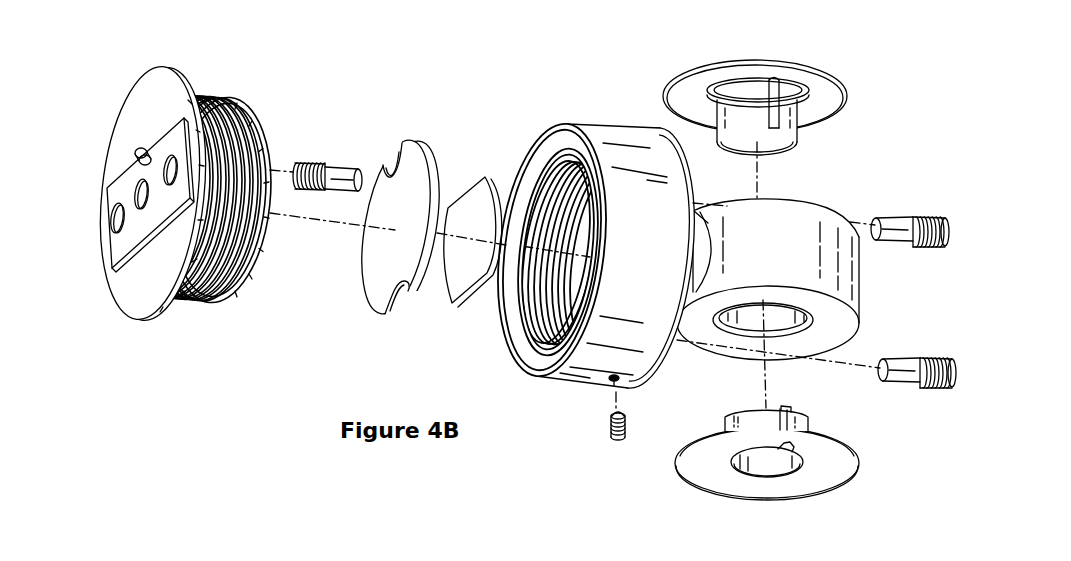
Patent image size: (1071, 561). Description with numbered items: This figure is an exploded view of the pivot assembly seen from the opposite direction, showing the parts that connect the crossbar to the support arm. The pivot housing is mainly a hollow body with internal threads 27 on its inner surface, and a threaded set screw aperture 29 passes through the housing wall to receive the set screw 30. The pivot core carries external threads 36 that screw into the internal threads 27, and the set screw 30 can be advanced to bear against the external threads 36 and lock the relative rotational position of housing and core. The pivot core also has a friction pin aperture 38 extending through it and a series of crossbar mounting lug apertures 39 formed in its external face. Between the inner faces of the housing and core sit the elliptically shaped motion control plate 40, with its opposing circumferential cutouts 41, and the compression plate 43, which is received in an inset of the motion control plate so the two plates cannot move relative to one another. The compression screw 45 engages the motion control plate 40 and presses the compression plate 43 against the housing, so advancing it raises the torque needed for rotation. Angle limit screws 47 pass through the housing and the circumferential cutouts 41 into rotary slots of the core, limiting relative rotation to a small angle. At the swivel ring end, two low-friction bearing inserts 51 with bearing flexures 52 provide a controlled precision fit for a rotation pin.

The internal threads 27 is at (523, 333).
The threaded set screw aperture 29 is at (612, 382).
The set screw 30 is at (610, 438).
The external threads 36 is at (217, 100).
The friction pin aperture 38 is at (144, 157).
The crossbar mounting lug apertures 39 is at (113, 229).
The motion control plate 40 is at (368, 307).
The circumferential cutouts 41 is at (393, 160).
The compression plate 43 is at (474, 184).
The compression screw 45 is at (334, 164).
The angle limit screws 47 is at (889, 220).
The bearing inserts 51 is at (830, 67).
The bearing flexures 52 is at (802, 408).